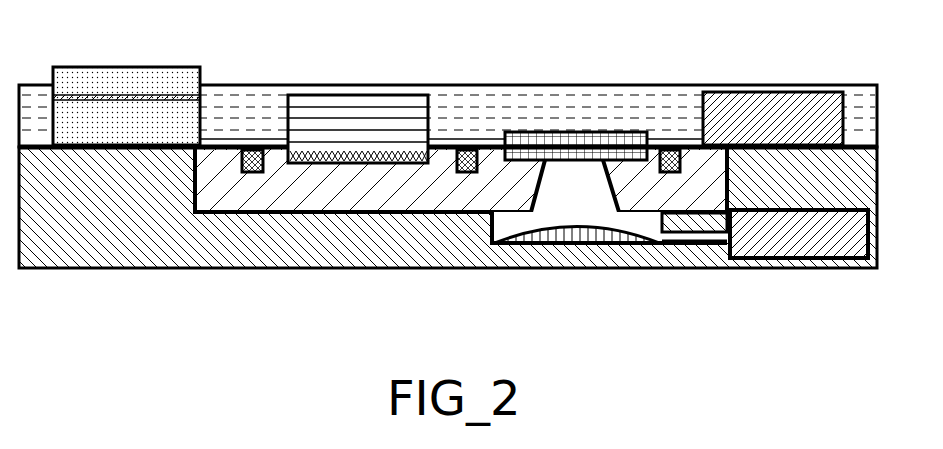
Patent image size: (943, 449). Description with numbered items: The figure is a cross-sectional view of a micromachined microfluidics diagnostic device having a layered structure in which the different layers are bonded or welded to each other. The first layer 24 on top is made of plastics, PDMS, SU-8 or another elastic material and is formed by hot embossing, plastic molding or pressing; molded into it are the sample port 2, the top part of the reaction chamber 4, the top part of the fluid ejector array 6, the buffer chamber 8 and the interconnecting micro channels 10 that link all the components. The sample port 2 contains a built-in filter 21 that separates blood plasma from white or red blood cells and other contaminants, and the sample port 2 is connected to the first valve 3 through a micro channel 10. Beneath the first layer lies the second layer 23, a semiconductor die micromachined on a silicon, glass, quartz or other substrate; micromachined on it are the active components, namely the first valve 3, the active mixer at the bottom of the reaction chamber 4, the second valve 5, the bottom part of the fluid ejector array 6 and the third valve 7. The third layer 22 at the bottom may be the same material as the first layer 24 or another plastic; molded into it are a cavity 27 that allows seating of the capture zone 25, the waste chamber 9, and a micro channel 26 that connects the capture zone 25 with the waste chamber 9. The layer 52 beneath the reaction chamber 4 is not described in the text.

The sample port 2 is at (107, 72).
The filter 21 is at (138, 95).
The third layer 22 is at (105, 250).
The second layer 23 is at (275, 195).
The first layer 24 is at (33, 97).
The capture zone 25 is at (606, 236).
The micro channel 26 is at (686, 240).
The cavity 27 is at (580, 208).
The first valve 3 is at (255, 142).
The reaction chamber 4 is at (365, 186).
The adhesive layer 52 is at (338, 153).
The second valve 5 is at (484, 138).
The fluid ejector array 6 is at (535, 152).
The third valve 7 is at (670, 153).
The buffer chamber 8 is at (745, 112).
The waste chamber 9 is at (782, 243).
The micro channels 10 is at (215, 140).